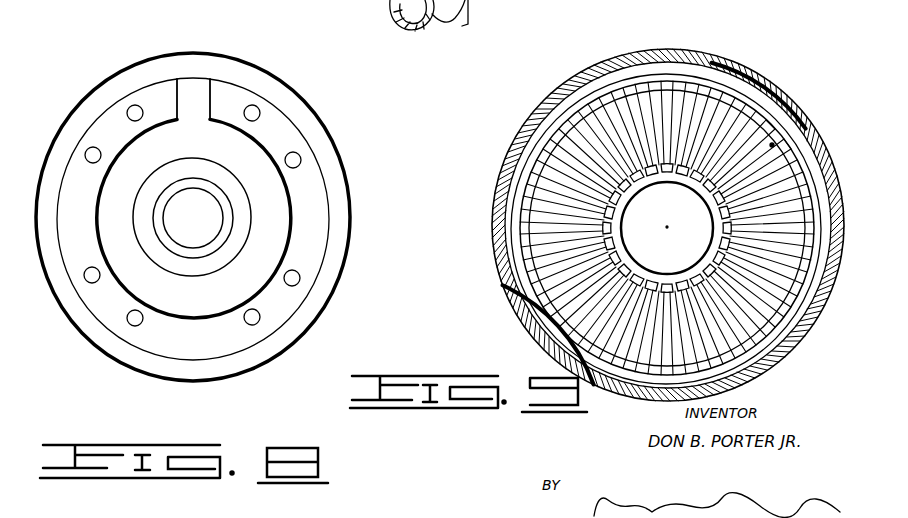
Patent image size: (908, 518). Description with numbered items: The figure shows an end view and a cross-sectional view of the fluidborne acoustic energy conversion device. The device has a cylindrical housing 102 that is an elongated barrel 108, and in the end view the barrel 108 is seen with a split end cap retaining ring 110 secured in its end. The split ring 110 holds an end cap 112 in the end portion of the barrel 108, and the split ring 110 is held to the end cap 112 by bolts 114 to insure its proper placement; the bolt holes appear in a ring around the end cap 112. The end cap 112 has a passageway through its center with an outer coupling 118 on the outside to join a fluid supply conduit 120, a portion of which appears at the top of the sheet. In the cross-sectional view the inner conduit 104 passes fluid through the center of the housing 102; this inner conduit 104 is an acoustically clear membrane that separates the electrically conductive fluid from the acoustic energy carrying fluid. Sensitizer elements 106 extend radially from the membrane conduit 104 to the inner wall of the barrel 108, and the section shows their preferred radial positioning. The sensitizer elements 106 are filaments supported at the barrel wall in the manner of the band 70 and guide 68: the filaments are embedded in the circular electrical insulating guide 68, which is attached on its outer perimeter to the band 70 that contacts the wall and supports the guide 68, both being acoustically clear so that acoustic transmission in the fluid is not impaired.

In FIG. 8, the cylindrical housing 102 is at (348, 256).
In FIG. 8, the elongated barrel 108 is at (343, 196).
In FIG. 9, the elongated barrel 108 is at (710, 60).
In FIG. 8, the split end cap retaining ring 110 is at (275, 133).
In FIG. 8, the end cap 112 is at (195, 88).
In FIG. 8, the bolts 114 is at (130, 106).
In FIG. 8, the outer coupling 118 is at (197, 168).
In FIG. 8, the fluid supply conduit 120 is at (388, 10).
In FIG. 9, the band 70 is at (634, 62).
In FIG. 9, the electrical insulating guide 68 is at (638, 80).
In FIG. 9, the inner conduit 104 is at (630, 191).
In FIG. 9, the sensitizer elements 106 is at (772, 145).